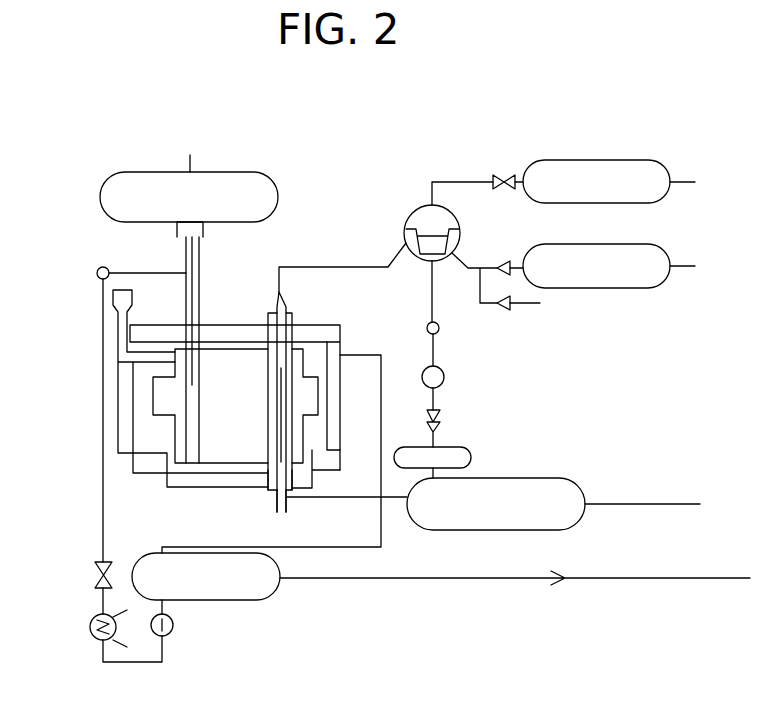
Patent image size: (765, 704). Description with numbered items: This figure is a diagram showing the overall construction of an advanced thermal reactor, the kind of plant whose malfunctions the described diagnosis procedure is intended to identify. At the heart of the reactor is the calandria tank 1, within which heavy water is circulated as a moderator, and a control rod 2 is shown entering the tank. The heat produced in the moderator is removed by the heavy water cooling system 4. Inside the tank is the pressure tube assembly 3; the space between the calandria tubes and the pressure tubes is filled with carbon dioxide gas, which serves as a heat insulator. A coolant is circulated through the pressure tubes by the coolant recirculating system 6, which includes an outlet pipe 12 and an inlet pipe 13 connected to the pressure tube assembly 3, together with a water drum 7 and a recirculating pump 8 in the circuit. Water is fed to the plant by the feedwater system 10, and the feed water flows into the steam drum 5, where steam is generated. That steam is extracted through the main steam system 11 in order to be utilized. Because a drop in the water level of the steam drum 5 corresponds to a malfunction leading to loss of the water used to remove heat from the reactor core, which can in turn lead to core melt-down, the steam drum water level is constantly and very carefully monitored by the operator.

The calandria tank 1 is at (133, 458).
The control rod 2 is at (253, 170).
The pressure tube assembly 3 is at (297, 507).
The heavy water cooling system 4 is at (223, 603).
The steam drum 5 is at (407, 218).
The coolant recirculating system 6 is at (463, 530).
The water drum 7 is at (468, 448).
The recirculating pump 8 is at (445, 375).
The feedwater system 10 is at (663, 242).
The main steam system 11 is at (653, 158).
The outlet pipe 12 is at (272, 296).
The inlet pipe 13 is at (267, 500).